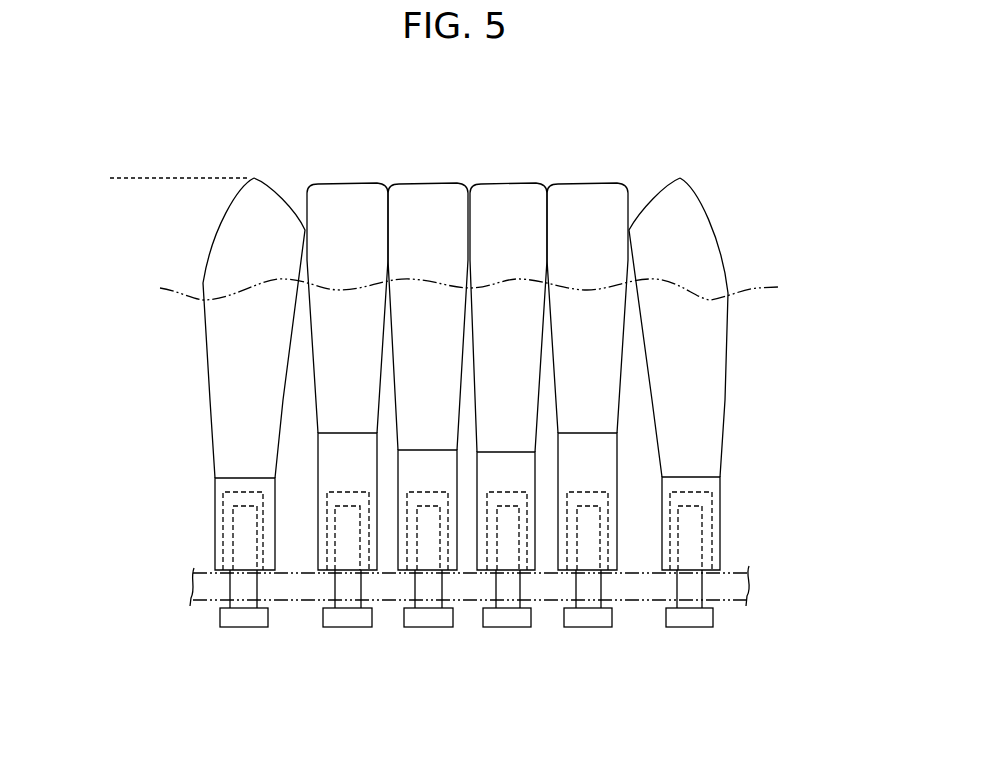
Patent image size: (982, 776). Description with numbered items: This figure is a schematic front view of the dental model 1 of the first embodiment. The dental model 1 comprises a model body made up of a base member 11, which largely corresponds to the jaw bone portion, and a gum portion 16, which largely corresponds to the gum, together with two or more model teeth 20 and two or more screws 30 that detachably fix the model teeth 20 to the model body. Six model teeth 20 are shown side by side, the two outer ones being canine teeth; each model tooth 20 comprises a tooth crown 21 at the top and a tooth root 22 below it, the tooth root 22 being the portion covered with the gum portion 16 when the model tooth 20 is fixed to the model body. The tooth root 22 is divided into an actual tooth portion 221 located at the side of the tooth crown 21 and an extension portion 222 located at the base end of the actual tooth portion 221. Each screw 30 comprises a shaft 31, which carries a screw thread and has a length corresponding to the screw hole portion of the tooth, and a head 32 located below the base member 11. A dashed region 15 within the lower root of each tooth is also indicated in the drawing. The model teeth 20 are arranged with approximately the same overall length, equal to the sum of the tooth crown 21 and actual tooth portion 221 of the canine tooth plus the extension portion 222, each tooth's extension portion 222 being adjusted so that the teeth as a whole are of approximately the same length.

The dental model 1 is at (779, 110).
The base member 11 is at (757, 584).
The fitting hole 15 is at (246, 497).
The gum portion 16 is at (764, 286).
The model tooth 20 is at (265, 165).
The tooth crown 21 is at (117, 178).
The tooth root 22 is at (117, 290).
The actual tooth portion 221 is at (192, 307).
The extension portion 222 is at (192, 478).
The screw 30 is at (244, 642).
The shaft 31 is at (238, 556).
The head 32 is at (262, 618).